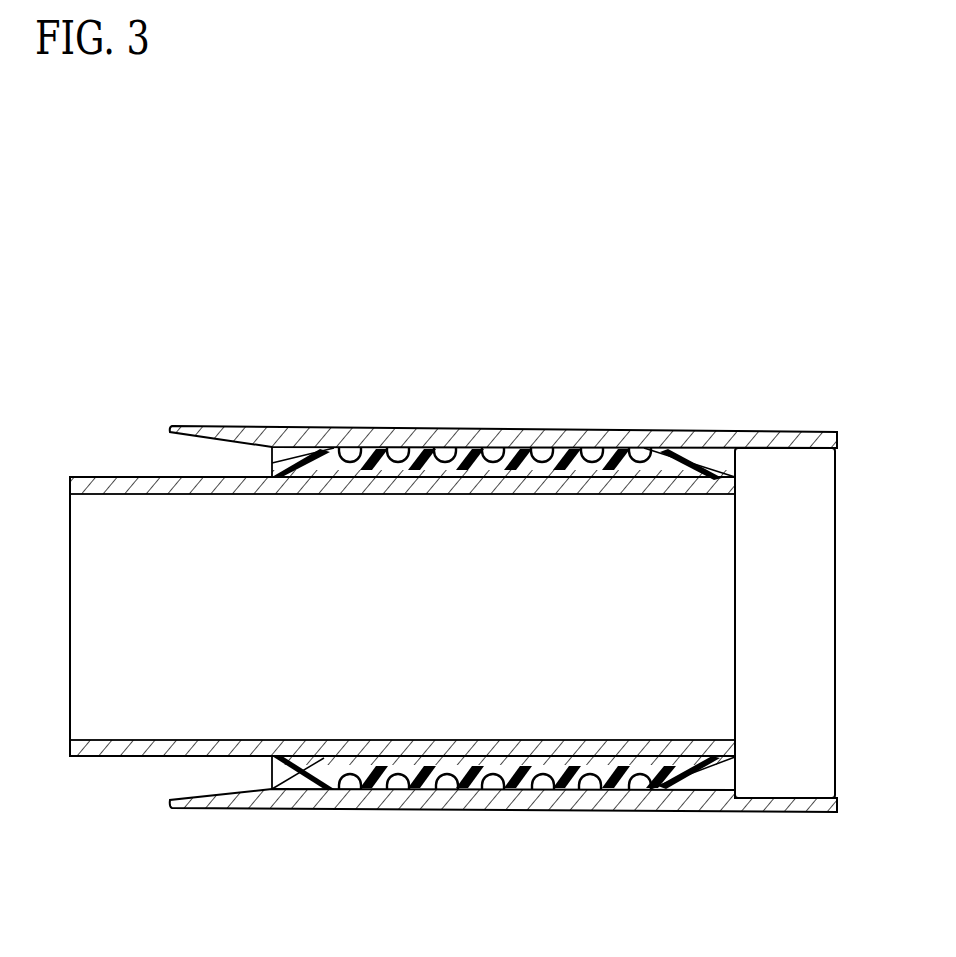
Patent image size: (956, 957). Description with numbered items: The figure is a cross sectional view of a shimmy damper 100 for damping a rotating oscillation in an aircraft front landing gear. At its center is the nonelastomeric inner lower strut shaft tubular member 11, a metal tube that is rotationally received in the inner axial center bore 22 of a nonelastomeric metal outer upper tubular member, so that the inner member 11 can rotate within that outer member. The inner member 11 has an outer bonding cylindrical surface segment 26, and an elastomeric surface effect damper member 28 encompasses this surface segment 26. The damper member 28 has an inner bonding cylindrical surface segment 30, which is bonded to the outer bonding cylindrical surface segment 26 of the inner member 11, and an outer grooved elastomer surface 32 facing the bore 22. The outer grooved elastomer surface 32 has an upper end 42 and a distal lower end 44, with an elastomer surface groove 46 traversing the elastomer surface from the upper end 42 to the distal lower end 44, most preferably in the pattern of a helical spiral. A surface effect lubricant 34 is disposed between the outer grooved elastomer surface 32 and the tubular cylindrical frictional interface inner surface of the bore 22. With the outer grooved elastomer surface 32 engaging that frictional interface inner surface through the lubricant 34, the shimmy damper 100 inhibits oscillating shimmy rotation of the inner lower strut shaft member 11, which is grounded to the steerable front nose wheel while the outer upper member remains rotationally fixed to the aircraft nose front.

The shimmy damper 100 is at (262, 257).
The nonelastomeric inner lower strut shaft tubular member 11 is at (120, 763).
The inner axial center bore 22 is at (758, 622).
The outer bonding cylindrical surface segment 26 is at (418, 428).
The elastomeric surface effect damper member 28 is at (665, 777).
The inner bonding cylindrical surface segment 30 is at (508, 615).
The outer grooved elastomer surface 32 is at (648, 465).
The surface effect lubricant 34 is at (350, 455).
The upper end 42 is at (704, 774).
The distal lower end 44 is at (292, 775).
The elastomer surface groove 46 is at (446, 455).